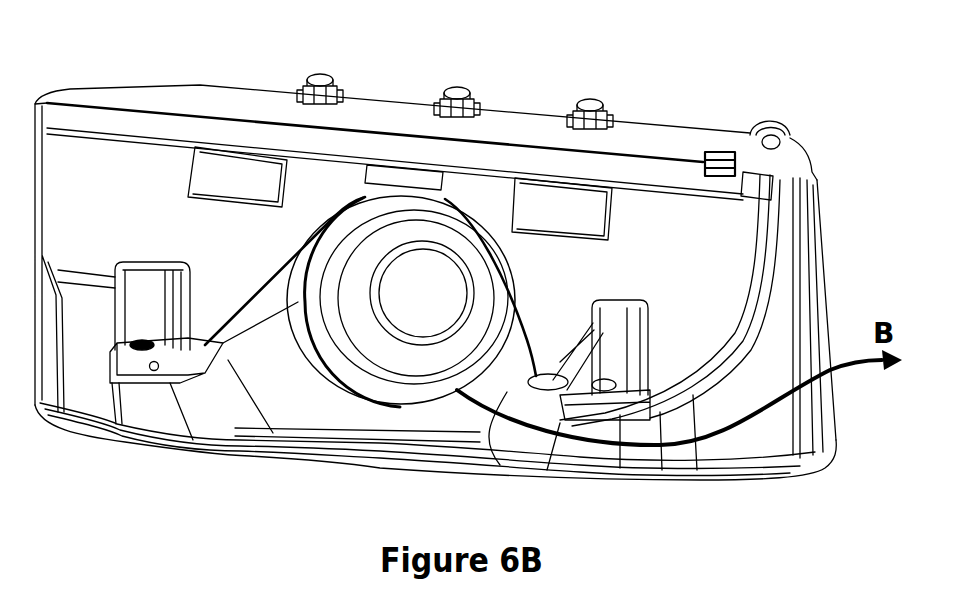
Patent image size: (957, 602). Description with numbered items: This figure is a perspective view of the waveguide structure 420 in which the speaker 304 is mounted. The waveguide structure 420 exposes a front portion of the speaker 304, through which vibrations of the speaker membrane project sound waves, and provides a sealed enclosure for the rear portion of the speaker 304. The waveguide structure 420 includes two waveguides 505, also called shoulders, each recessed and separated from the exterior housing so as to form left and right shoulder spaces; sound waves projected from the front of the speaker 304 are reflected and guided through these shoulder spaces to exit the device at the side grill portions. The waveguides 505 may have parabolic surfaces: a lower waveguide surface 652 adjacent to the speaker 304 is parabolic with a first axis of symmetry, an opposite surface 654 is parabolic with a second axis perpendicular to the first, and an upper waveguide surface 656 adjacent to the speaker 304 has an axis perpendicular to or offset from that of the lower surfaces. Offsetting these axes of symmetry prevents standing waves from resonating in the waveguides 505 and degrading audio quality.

The waveguide structure 420 is at (126, 56).
The speaker 304 is at (446, 310).
The upper waveguide surface 656 is at (432, 200).
The waveguide 505 is at (140, 410).
The waveguide surface 652 is at (300, 413).
The waveguide surface 654 is at (475, 428).